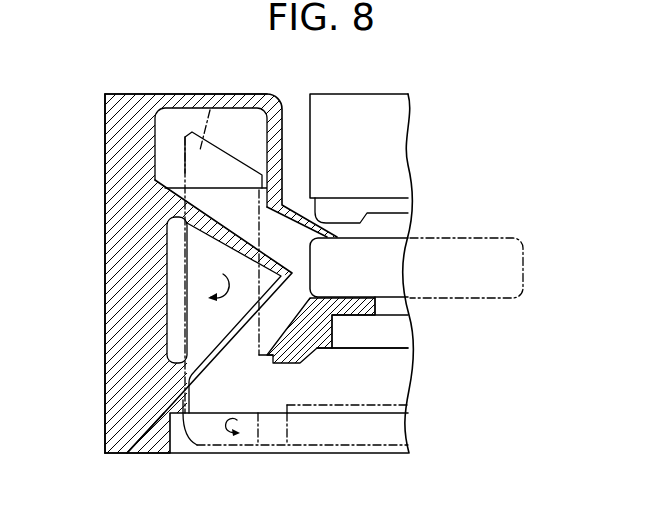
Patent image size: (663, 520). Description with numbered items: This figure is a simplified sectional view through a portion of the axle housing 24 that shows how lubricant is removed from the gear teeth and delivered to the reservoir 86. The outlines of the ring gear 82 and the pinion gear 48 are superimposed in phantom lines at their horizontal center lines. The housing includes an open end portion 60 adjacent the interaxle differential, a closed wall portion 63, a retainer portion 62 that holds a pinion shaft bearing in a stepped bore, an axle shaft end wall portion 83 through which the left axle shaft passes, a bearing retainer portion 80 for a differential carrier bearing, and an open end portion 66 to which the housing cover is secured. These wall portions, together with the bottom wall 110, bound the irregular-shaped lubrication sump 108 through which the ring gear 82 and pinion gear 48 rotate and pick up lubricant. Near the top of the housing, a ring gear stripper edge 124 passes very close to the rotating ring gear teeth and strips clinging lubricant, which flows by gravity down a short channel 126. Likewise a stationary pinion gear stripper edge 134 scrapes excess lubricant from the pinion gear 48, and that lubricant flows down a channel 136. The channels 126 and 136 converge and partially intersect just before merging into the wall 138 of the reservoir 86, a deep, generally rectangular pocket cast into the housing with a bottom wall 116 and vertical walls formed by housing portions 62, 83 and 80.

The open end portion 60 is at (105, 130).
The closed wall portion 63 is at (152, 94).
The axle housing 24 is at (98, 210).
The hollow pinion gear 48 is at (210, 107).
The pinion gear stripper edge 134 is at (215, 187).
The channel 136 is at (230, 207).
The retainer portion 62 is at (297, 150).
The axle shaft end wall portion 83 is at (378, 213).
The reservoir 86 is at (397, 248).
The bottom wall 116 is at (453, 255).
The wall 138 is at (313, 268).
The bearing retainer portion 80 is at (362, 312).
The lubrication or oil sump 108 is at (383, 377).
The bottom wall 110 is at (393, 392).
The channel 126 is at (271, 322).
The ring gear stripper edge 124 is at (207, 410).
The ring gear 82 is at (258, 432).
The open end portion 66 is at (130, 455).